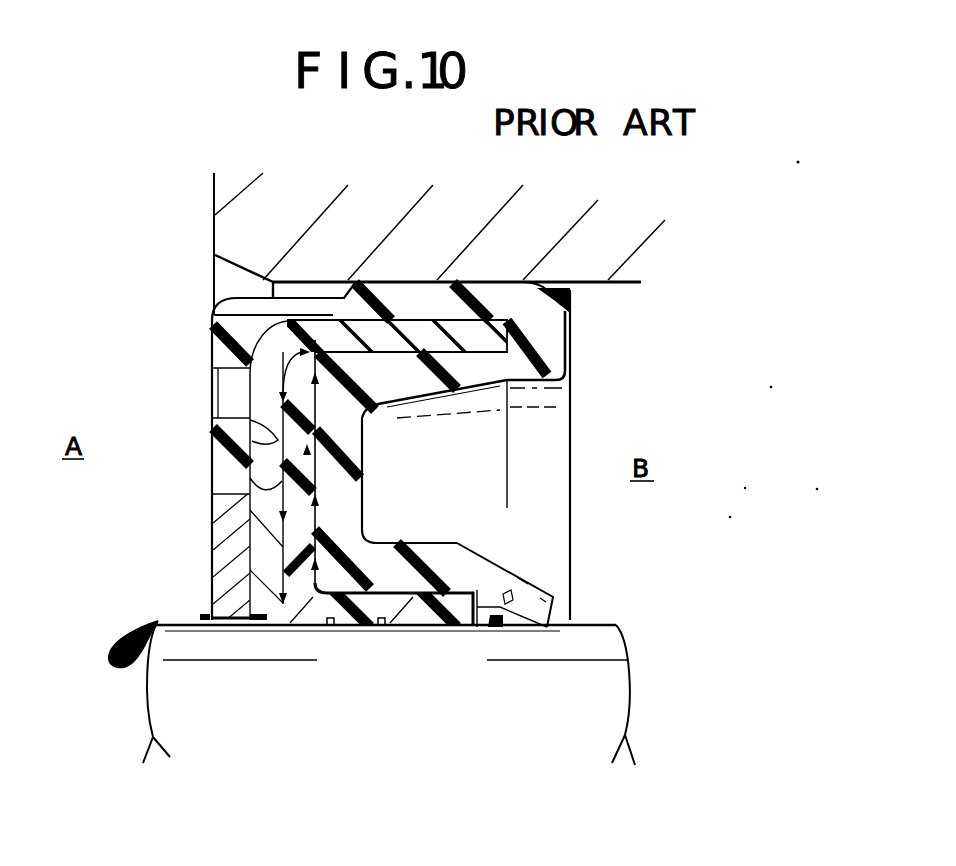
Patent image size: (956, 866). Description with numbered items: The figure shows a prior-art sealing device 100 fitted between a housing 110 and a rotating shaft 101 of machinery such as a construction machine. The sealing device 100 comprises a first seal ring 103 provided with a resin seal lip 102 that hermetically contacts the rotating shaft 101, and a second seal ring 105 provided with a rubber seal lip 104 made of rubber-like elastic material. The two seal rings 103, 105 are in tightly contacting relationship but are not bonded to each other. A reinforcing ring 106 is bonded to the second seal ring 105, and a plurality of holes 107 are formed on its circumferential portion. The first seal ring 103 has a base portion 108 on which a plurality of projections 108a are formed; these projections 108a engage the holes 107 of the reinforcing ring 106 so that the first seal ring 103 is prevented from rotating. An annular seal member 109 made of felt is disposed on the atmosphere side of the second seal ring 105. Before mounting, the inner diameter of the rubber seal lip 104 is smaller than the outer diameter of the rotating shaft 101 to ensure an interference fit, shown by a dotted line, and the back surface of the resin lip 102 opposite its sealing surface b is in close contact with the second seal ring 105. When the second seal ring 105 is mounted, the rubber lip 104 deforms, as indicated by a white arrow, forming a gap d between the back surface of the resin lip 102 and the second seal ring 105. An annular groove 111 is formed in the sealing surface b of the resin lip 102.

The sealing device 100 is at (184, 284).
The rotating shaft 101 is at (617, 688).
The resin seal lip 102 is at (405, 610).
The first seal ring 103 is at (293, 620).
The rubber seal lip 104 is at (553, 597).
The second seal ring 105 is at (580, 341).
The reinforcing ring 106 is at (430, 323).
The holes 107 is at (277, 440).
The base portion 108 is at (350, 472).
The projections 108a is at (250, 485).
The annular seal member 109 is at (215, 550).
The housing 110 is at (230, 214).
The annular groove 111 is at (333, 625).
The sealing surface b is at (367, 632).
The gap d is at (402, 585).